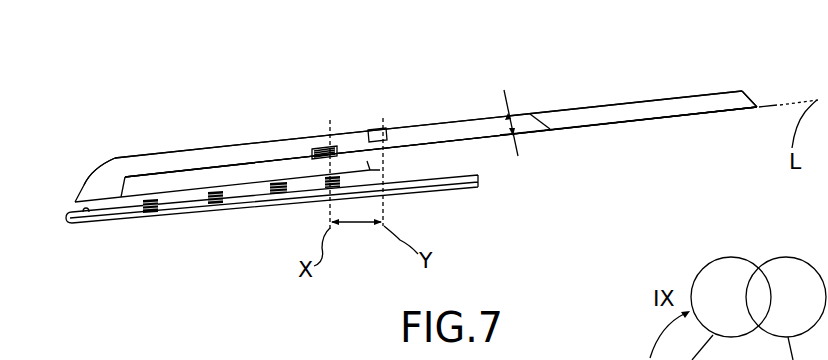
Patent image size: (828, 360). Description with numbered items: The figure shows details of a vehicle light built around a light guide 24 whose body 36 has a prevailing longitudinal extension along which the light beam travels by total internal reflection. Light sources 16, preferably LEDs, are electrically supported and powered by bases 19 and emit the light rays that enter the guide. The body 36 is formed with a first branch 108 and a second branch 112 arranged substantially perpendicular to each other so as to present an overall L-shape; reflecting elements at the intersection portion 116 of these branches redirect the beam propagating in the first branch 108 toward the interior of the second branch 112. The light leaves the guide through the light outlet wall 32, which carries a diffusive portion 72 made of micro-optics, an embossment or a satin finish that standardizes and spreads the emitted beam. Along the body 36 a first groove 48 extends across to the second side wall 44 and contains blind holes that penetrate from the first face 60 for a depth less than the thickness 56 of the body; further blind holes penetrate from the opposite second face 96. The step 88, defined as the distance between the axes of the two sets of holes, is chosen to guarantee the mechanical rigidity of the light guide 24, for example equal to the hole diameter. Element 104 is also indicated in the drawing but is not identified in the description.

The first branch 108 is at (85, 192).
The intersection portion 116 is at (98, 165).
The second branch 112 is at (156, 165).
The light guide 24 is at (231, 162).
The body 36 is at (441, 142).
The first groove 48 is at (323, 128).
The thickness 56 is at (503, 100).
The second face 96 is at (582, 107).
The light outlet wall 32 is at (752, 100).
The diffusive portion 72 is at (749, 99).
The first face 60 is at (607, 126).
The base 19 is at (453, 186).
The light source 16 is at (334, 190).
The step 88 is at (356, 186).
The second side wall 44 is at (658, 308).
The roller 104 is at (618, 359).